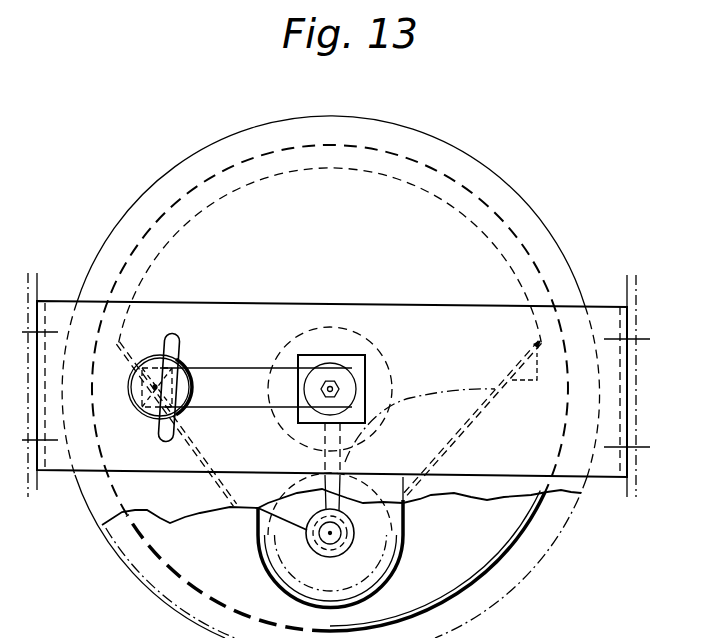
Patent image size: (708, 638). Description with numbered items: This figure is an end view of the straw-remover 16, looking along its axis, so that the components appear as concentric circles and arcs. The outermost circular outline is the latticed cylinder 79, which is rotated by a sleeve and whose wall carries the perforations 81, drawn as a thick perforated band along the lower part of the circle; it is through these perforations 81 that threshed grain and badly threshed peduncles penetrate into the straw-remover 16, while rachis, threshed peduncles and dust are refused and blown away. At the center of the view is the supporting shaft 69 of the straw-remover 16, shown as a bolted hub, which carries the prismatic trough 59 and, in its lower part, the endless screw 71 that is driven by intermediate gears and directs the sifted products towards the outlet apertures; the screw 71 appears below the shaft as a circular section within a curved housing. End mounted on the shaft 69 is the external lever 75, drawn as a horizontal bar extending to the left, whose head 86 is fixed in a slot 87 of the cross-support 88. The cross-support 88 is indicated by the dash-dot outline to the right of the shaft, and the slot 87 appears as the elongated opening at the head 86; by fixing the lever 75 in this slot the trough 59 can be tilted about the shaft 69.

The straw-remover 16 is at (558, 233).
The prismatic trough 59 is at (202, 457).
The supporting shaft 69 is at (335, 371).
The endless screw 71 is at (379, 547).
The external lever 75 is at (233, 382).
The latticed cylinder 79 is at (521, 535).
The perforations 81 is at (507, 559).
The head 86 is at (153, 389).
The slot 87 is at (168, 333).
The cross-support 88 is at (420, 402).